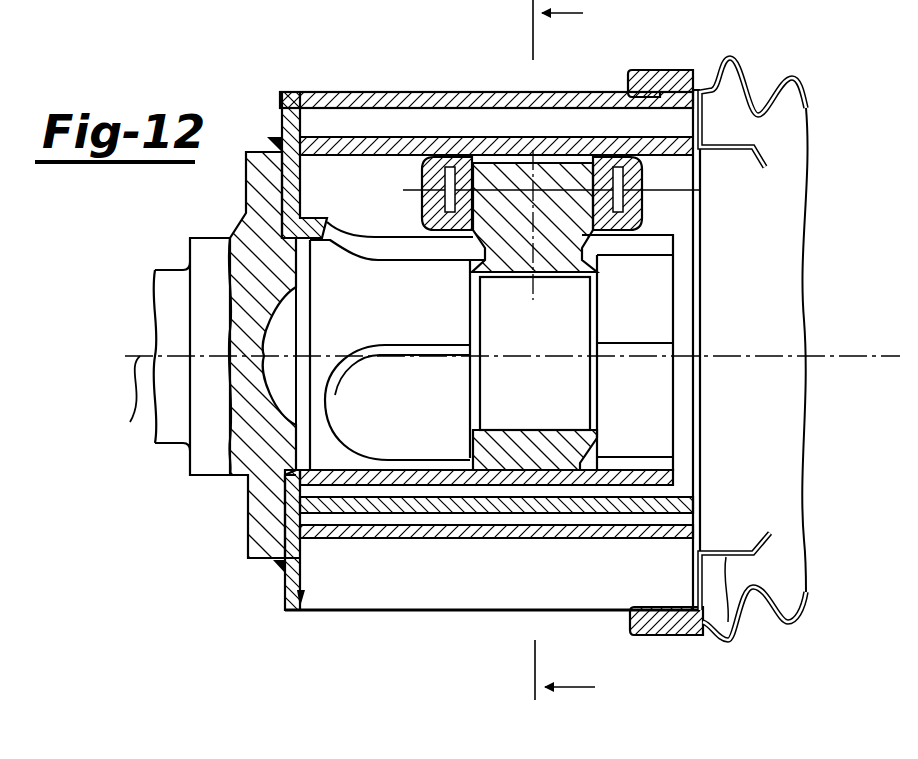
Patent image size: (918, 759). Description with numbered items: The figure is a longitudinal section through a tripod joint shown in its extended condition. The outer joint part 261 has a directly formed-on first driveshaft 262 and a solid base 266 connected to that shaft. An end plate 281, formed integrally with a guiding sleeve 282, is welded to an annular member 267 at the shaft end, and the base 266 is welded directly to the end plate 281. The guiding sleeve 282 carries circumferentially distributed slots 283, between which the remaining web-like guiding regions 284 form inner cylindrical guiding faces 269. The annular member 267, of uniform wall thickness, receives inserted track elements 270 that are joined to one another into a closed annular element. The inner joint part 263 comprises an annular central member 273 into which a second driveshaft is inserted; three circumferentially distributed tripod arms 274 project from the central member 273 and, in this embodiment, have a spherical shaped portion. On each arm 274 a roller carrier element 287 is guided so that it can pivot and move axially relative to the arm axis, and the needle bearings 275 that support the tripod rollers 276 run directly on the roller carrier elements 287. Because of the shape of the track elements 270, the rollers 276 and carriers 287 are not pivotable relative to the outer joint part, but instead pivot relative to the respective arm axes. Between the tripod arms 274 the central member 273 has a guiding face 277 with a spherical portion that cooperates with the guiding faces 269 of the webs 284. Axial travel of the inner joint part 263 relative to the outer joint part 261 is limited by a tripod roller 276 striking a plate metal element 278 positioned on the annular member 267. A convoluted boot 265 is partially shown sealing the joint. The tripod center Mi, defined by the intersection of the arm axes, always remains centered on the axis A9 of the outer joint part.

The outer joint part 261 is at (412, 318).
The first driveshaft 262 is at (165, 303).
The inner joint part 263 is at (757, 110).
The convoluted boot 265 is at (806, 92).
The solid base 266 is at (262, 232).
The annular member 267 is at (352, 100).
The inner cylindrical guiding faces 269 is at (405, 482).
The track elements 270 is at (414, 291).
The annular central member 273 is at (512, 455).
The tripod arms 274 is at (505, 180).
The needle bearings 275 is at (612, 208).
The tripod rollers 276 is at (660, 180).
The guiding face 277 is at (578, 452).
The plate metal element 278 is at (742, 627).
The end plate 281 is at (290, 530).
The guiding sleeve 282 is at (300, 565).
The slots 283 is at (357, 423).
The web-like guiding regions 284 is at (343, 482).
The roller carrier elements 287 is at (600, 200).
The axis of the outer joint part A9 is at (109, 395).
The center of the tripod Mi is at (530, 355).